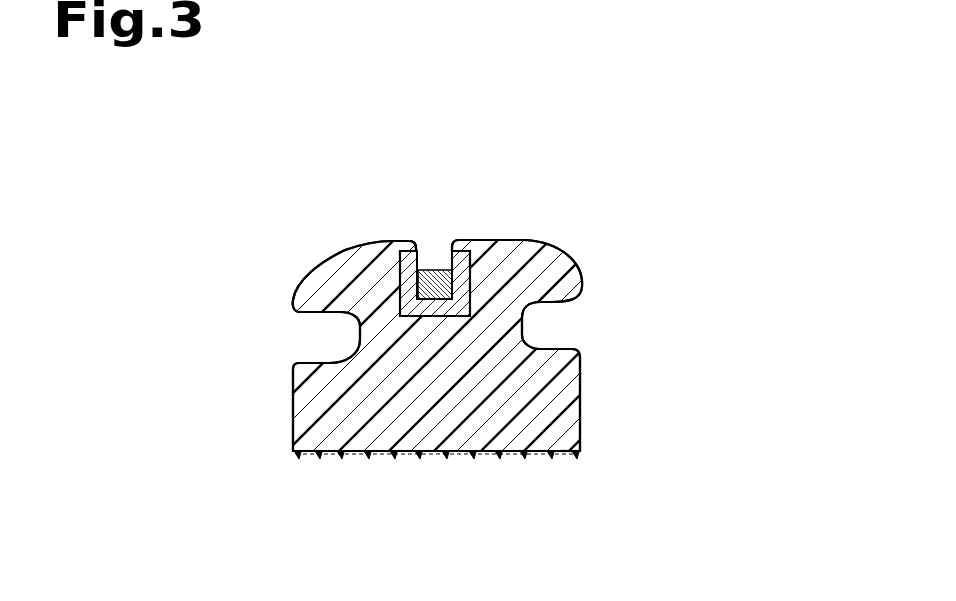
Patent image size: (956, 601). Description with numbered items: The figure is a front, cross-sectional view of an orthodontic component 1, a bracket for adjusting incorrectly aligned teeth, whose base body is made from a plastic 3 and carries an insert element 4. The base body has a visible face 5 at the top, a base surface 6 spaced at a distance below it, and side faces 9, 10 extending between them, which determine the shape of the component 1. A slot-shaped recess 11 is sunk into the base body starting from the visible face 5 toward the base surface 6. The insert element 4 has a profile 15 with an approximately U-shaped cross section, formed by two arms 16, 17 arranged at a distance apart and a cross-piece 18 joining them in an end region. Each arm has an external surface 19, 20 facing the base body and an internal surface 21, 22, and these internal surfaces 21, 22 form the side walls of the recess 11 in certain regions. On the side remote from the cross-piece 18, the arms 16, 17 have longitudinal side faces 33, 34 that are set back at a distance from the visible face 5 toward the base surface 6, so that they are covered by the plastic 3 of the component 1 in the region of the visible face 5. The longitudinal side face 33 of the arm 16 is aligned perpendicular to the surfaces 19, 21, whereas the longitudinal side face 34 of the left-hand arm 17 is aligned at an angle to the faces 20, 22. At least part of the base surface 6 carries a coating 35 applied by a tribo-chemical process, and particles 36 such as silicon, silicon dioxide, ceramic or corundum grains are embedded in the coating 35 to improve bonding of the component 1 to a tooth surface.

The orthodontic component 1 is at (688, 249).
The plastic 3 is at (569, 372).
The insert element 4 is at (487, 232).
The visible face 5 is at (568, 256).
The base surface 6 is at (573, 453).
The side face 9 is at (590, 412).
The side face 10 is at (293, 390).
The slot-shaped recess 11 is at (433, 205).
The profile 15 is at (372, 241).
The arm 16 is at (536, 302).
The arm 17 is at (397, 268).
The cross-piece 18 is at (437, 308).
The external surface 19 is at (470, 297).
The external surface 20 is at (400, 288).
The internal surface 21 is at (445, 260).
The internal surface 22 is at (424, 262).
The longitudinal side face 33 is at (463, 262).
The longitudinal side face 34 is at (392, 243).
The coating 35 is at (484, 474).
The particles 36 is at (470, 447).